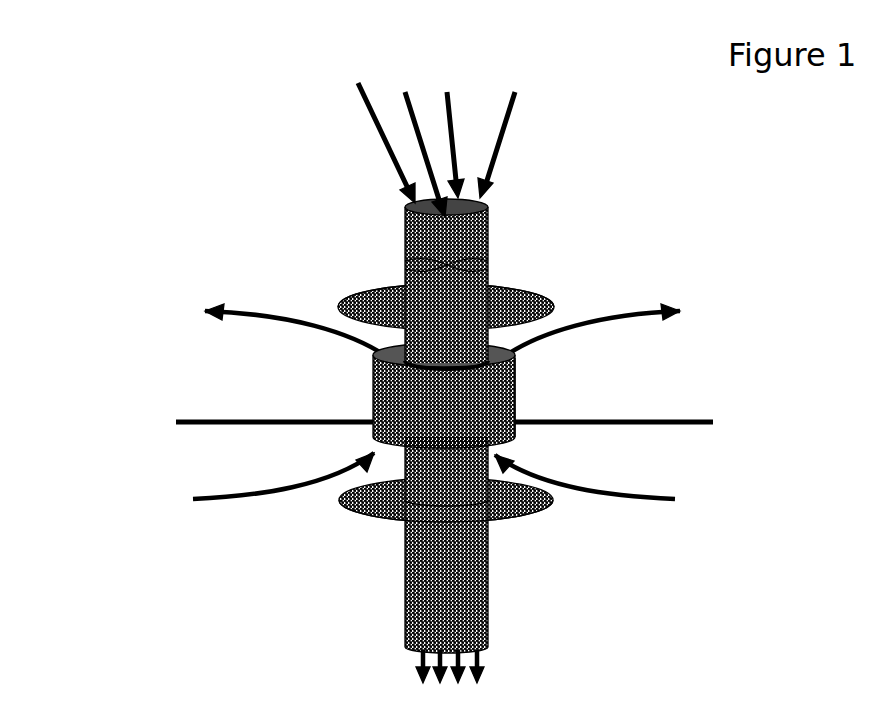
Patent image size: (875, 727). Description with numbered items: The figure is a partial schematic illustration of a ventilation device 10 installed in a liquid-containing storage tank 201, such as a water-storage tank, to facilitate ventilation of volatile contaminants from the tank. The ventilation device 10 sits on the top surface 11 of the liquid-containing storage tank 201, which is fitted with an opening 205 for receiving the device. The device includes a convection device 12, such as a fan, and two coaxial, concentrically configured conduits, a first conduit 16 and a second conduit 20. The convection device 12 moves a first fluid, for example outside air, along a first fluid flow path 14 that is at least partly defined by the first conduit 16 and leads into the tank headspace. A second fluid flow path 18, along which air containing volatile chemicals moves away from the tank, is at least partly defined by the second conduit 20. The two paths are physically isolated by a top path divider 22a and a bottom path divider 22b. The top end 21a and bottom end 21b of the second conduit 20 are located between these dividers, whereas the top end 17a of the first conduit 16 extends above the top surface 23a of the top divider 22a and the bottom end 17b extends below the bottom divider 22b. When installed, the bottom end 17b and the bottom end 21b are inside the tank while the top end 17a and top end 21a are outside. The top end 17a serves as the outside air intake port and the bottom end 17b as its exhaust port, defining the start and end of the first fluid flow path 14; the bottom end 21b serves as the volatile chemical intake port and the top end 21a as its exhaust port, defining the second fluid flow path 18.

The ventilation device 10 is at (240, 165).
The top surface 11 is at (670, 420).
The convection device 12 is at (513, 276).
The first fluid flow path 14 is at (535, 148).
The first conduit 16 is at (444, 571).
The top end of the first conduit 17a is at (481, 199).
The bottom end of the first conduit 17b is at (407, 650).
The second fluid flow path 18 is at (645, 319).
The second conduit 20 is at (409, 398).
The top end of the second conduit 21a is at (406, 349).
The bottom end of the second conduit 21b is at (515, 440).
The top path divider 22a is at (448, 285).
The bottom path divider 22b is at (387, 497).
The top surface of the top divider 23a is at (528, 305).
The liquid-containing storage tank 201 is at (192, 403).
The opening 205 is at (518, 416).